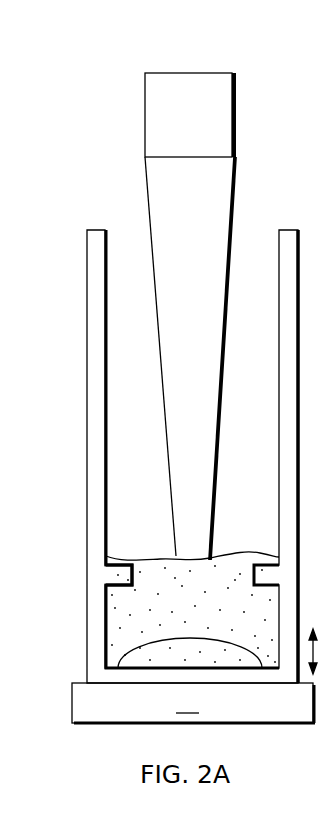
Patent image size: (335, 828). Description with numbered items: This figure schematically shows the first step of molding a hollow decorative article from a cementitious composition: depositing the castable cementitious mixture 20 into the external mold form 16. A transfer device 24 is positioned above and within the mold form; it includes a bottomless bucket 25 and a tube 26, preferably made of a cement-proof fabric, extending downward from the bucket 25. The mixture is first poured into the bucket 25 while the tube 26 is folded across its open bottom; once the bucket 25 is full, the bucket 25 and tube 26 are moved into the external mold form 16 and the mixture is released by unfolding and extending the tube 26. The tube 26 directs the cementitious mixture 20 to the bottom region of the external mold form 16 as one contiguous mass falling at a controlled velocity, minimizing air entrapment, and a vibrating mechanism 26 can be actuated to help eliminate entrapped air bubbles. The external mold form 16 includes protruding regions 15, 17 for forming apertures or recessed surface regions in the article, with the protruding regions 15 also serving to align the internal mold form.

The transfer device 24 is at (179, 314).
The bottomless bucket 25 is at (126, 104).
The tube 26 is at (231, 223).
The external mold form 16 is at (87, 388).
The protruding region 15 is at (120, 581).
The castable cementitious mixture 20 is at (128, 561).
The protruding region 17 is at (146, 660).